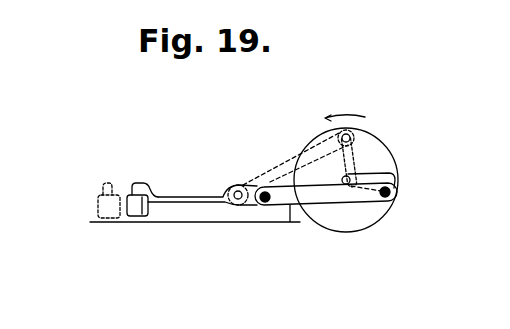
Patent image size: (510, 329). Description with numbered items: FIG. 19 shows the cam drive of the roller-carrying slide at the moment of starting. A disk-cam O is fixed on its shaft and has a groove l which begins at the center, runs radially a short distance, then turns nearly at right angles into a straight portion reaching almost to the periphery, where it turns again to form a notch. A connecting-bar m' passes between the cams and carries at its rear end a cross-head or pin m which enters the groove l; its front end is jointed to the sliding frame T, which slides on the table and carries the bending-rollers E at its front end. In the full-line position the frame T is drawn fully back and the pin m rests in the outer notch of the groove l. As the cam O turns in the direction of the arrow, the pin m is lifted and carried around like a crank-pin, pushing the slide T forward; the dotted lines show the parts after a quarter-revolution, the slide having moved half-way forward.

The bending-roller E is at (148, 210).
The sliding frame T is at (202, 201).
The disk-cam O is at (346, 173).
The groove l is at (382, 174).
The cross-head or pin m is at (398, 191).
The connecting-bar m' is at (326, 194).